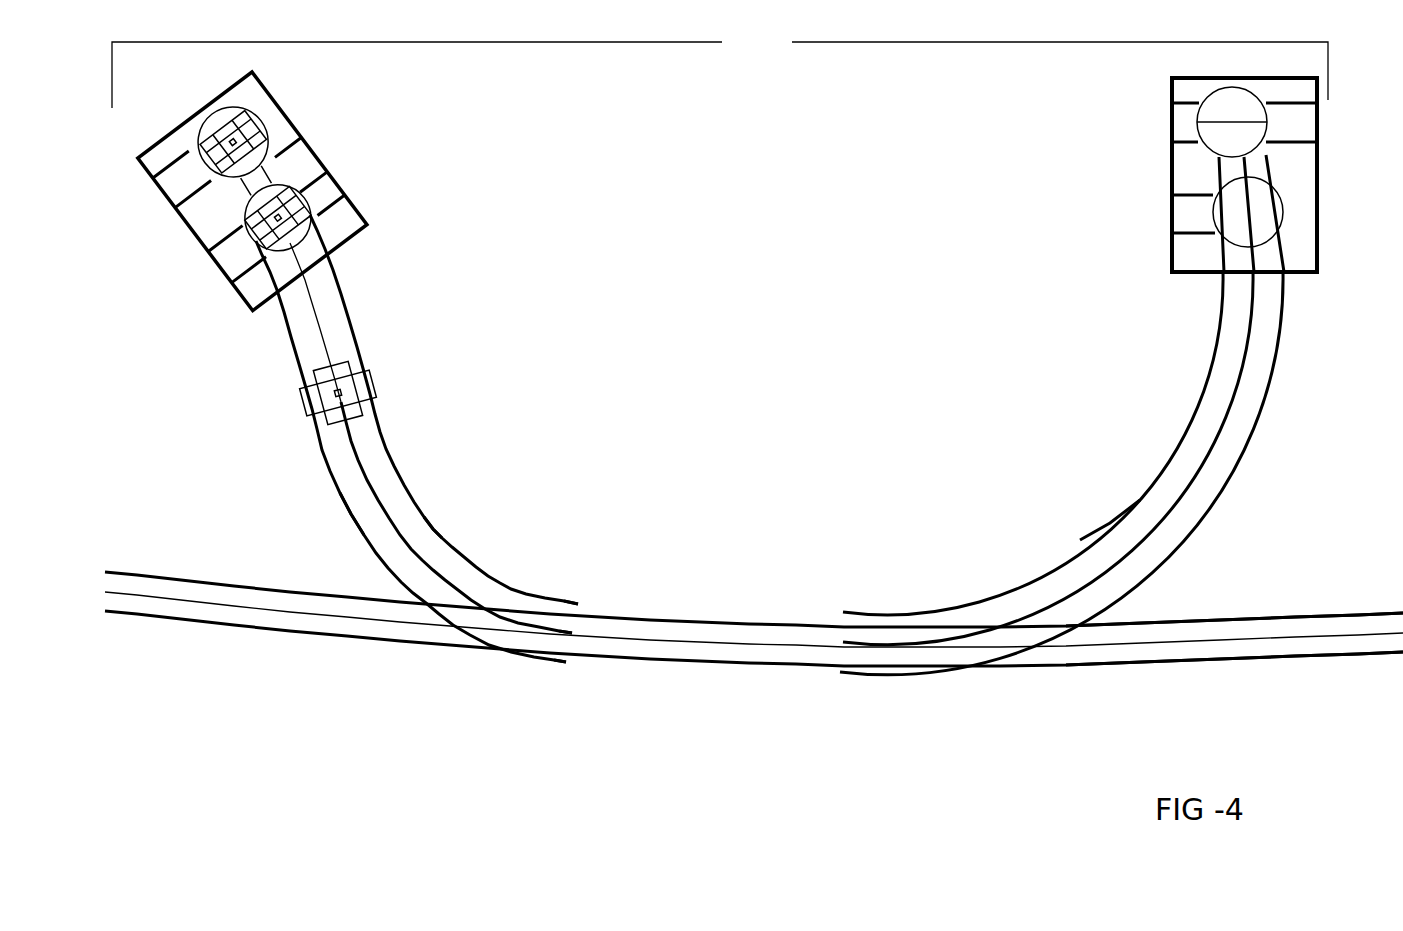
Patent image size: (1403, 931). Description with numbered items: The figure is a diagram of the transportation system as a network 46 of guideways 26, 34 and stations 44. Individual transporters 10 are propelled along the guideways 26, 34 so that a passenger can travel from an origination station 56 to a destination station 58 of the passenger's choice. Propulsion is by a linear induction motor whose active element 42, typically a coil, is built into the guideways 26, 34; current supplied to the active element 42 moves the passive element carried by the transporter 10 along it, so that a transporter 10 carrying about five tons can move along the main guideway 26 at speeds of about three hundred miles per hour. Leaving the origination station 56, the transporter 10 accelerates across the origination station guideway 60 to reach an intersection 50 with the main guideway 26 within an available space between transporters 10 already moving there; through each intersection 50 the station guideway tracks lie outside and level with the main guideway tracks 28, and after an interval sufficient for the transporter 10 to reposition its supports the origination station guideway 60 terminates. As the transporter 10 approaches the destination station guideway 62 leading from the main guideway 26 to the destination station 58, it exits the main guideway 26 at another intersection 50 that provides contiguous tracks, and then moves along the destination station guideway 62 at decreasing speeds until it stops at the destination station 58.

The network 46 is at (720, 68).
The origination station 56 is at (297, 157).
The stations 44 is at (303, 208).
The guideways 34 is at (357, 322).
The transporter 10 is at (350, 390).
The origination station guideway 60 is at (350, 513).
The intersection 50 is at (567, 652).
The main guideway 26 is at (768, 663).
The main guideway tracks 28 is at (1197, 663).
The active element 42 is at (1212, 394).
The destination station guideway 62 is at (1208, 503).
The destination station 58 is at (1185, 162).